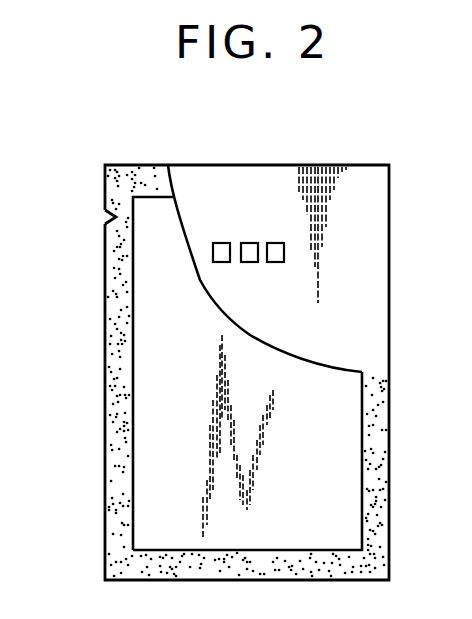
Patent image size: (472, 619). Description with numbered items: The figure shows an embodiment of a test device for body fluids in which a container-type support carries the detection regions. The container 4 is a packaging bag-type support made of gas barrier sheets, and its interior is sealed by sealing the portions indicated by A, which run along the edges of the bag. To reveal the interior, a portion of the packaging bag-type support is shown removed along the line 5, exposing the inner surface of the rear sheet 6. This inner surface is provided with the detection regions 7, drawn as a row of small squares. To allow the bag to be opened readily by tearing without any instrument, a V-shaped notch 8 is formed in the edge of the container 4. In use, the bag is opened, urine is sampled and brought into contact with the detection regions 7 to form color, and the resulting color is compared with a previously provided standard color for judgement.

The container 4 is at (105, 370).
The line 5 is at (218, 310).
The rear sheet 6 is at (360, 222).
The detection regions 7 is at (247, 242).
The V-shaped notch 8 is at (106, 217).
The sealed portions A is at (112, 502).